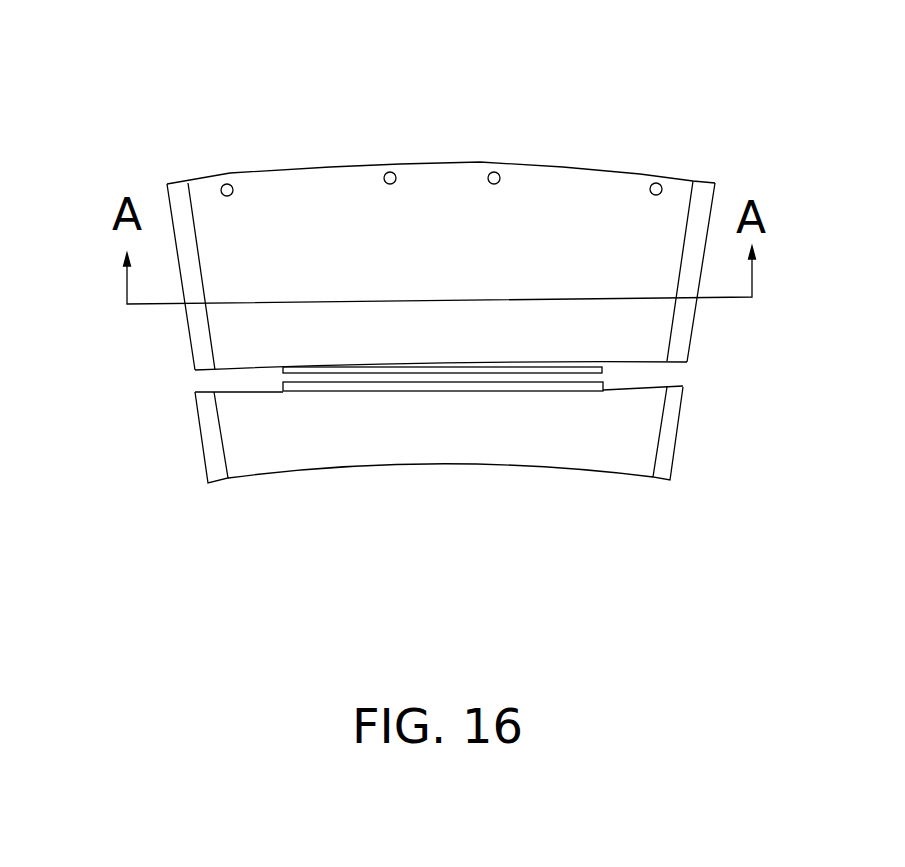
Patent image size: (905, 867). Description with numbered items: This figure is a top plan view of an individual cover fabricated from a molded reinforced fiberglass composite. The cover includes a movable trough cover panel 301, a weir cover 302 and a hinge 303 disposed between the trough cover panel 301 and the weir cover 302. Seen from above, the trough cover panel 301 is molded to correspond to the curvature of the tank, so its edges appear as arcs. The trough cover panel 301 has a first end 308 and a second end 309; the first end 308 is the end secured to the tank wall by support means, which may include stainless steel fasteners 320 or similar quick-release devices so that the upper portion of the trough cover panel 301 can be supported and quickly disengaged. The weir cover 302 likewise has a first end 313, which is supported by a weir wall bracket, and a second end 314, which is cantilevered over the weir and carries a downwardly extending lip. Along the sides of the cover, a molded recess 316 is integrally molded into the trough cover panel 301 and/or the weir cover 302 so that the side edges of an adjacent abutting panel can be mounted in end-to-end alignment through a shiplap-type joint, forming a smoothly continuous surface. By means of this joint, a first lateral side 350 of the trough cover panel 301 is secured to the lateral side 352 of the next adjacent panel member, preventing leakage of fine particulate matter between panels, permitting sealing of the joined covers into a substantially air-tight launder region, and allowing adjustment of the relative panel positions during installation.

The trough cover panel 301 is at (559, 220).
The weir cover 302 is at (438, 437).
The hinge 303 is at (292, 393).
The first end 308 is at (322, 150).
The second end 309 is at (252, 352).
The first end 313 is at (608, 400).
The second end 314 is at (377, 455).
The molded recess 316 is at (197, 328).
The stainless steel fasteners 320 is at (391, 172).
The first lateral side 350 is at (178, 176).
The lateral side 352 is at (702, 160).